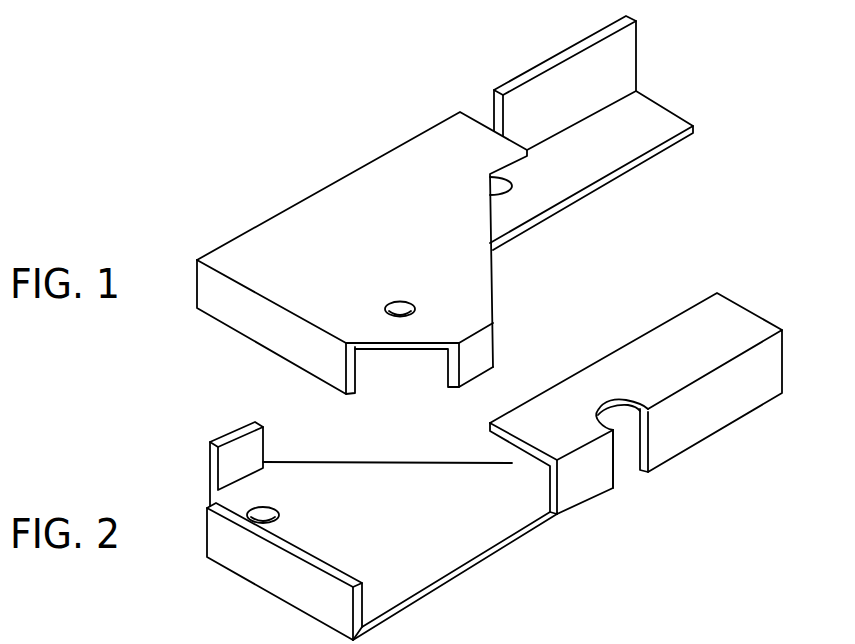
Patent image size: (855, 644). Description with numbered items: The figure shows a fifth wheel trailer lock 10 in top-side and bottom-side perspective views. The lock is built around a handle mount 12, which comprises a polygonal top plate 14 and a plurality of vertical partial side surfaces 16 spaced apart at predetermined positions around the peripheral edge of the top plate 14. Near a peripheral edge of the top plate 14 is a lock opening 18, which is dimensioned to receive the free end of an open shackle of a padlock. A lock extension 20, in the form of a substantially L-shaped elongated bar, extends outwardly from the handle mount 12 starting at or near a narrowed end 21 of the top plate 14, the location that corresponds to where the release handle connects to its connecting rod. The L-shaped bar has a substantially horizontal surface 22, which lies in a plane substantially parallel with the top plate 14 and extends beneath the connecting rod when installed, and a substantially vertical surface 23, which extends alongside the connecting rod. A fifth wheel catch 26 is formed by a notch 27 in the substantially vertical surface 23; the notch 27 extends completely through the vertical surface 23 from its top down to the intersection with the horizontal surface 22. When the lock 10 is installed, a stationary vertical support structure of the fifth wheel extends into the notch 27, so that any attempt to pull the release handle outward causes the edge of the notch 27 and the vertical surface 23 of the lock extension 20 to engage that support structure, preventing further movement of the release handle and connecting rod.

In FIG. 1, the fifth wheel trailer lock 10 is at (330, 147).
In FIG. 2, the fifth wheel trailer lock 10 is at (665, 497).
In FIG. 1, the handle mount 12 is at (217, 245).
In FIG. 2, the handle mount 12 is at (483, 562).
In FIG. 1, the top plate 14 is at (393, 172).
In FIG. 2, the top plate 14 is at (405, 582).
In FIG. 1, the vertical partial side surfaces 16 is at (227, 318).
In FIG. 2, the vertical partial side surfaces 16 is at (228, 442).
In FIG. 1, the lock opening 18 is at (400, 317).
In FIG. 2, the lock opening 18 is at (250, 513).
In FIG. 1, the lock extension 20 is at (650, 98).
In FIG. 2, the lock extension 20 is at (770, 330).
In FIG. 2, the narrowed end 21 is at (513, 472).
In FIG. 1, the substantially horizontal surface 22 is at (603, 165).
In FIG. 2, the substantially horizontal surface 22 is at (652, 343).
In FIG. 1, the substantially vertical surface 23 is at (627, 47).
In FIG. 2, the substantially vertical surface 23 is at (737, 412).
In FIG. 1, the fifth wheel catch 26 is at (485, 112).
In FIG. 2, the fifth wheel catch 26 is at (623, 480).
In FIG. 2, the notch 27 is at (615, 400).